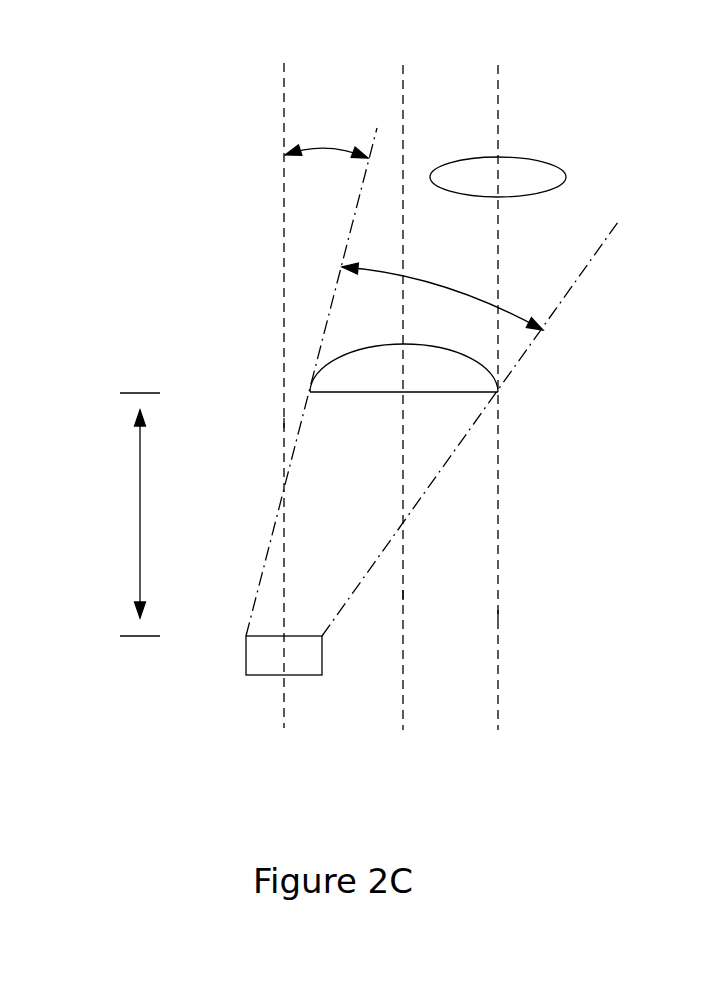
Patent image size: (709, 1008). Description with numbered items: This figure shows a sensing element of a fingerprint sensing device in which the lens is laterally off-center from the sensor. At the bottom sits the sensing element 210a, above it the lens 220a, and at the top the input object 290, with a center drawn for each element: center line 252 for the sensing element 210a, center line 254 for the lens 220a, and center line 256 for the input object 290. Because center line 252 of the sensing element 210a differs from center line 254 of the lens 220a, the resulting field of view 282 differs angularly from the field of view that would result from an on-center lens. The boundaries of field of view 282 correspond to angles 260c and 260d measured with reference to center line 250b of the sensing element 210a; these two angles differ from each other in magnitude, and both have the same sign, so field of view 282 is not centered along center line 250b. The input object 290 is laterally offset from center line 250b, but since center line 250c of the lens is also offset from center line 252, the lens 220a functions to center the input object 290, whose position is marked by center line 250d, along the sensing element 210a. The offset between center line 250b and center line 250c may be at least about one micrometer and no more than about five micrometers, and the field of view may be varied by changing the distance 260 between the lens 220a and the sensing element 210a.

The center line 252 is at (283, 83).
The center line 254 is at (402, 75).
The center line 256 is at (497, 70).
The field of view 282 is at (553, 260).
The input object 290 is at (540, 180).
The angle 260c is at (310, 145).
The angle 260d is at (540, 312).
The lens 220a is at (330, 382).
The center line 250b is at (283, 423).
The distance 260 is at (136, 513).
The center line 250c is at (407, 595).
The center line 250d is at (502, 615).
The sensing element 210a is at (302, 655).